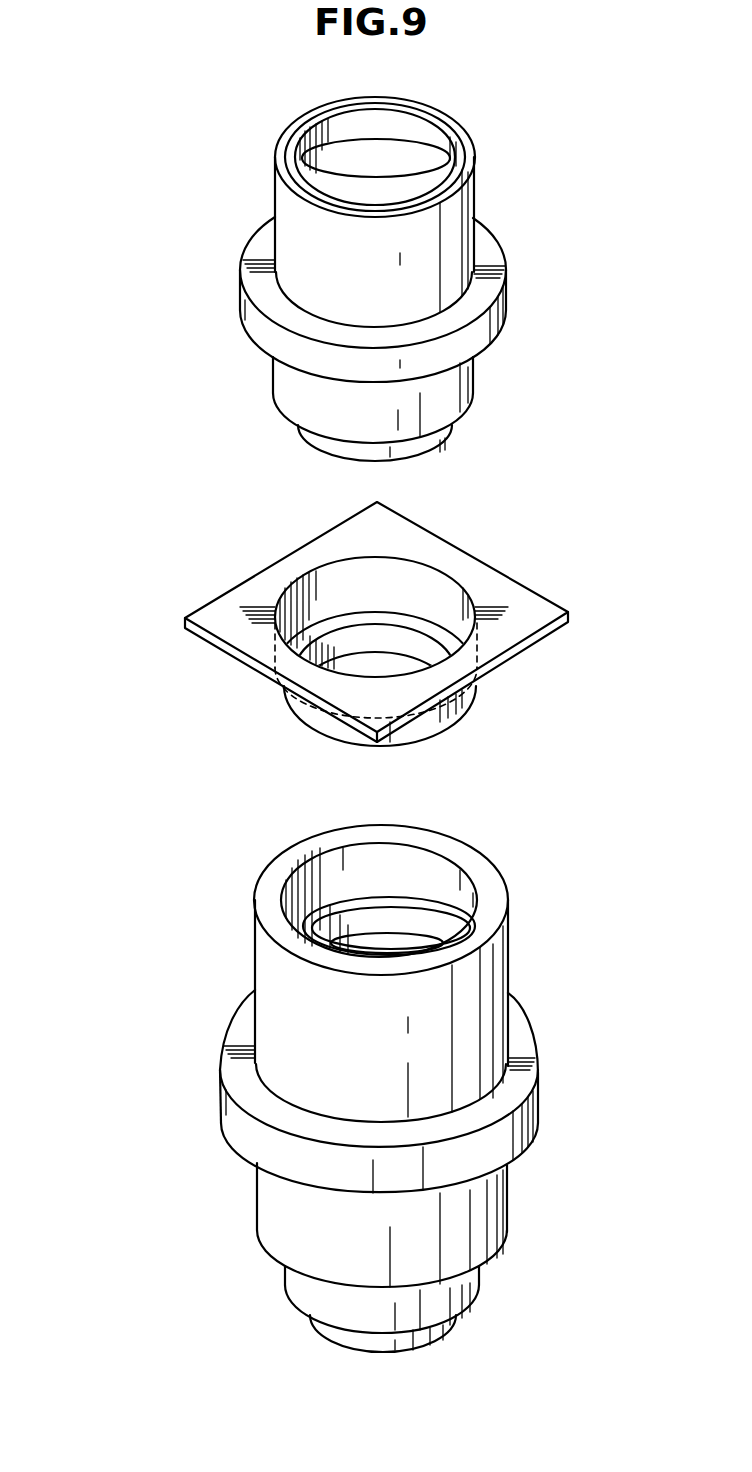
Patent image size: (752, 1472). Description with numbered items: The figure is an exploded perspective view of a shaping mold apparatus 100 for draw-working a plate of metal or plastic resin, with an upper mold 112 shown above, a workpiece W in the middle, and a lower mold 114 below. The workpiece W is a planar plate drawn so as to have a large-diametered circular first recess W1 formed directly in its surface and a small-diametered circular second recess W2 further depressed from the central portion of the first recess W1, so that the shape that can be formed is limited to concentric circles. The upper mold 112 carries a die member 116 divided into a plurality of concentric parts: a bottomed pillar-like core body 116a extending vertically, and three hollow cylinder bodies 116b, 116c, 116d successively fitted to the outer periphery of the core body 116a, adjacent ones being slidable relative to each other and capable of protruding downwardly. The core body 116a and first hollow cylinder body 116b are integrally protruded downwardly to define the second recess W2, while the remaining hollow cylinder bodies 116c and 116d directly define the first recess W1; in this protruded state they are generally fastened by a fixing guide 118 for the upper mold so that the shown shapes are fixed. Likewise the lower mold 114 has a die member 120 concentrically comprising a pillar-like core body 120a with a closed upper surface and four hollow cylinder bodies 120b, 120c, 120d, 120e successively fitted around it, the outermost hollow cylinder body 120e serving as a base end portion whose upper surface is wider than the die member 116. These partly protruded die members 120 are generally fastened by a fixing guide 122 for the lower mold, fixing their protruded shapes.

The shaping mold apparatus 100 is at (113, 1120).
The upper mold 112 is at (508, 217).
The lower mold 114 is at (547, 1007).
The die member 116 is at (471, 131).
The core body 116a is at (353, 167).
The first hollow cylinder body 116b is at (415, 150).
The hollow cylinder body 116c is at (295, 167).
The hollow cylinder body 116d is at (287, 175).
The fixing guide for the upper mold 118 is at (505, 302).
The die member 120 is at (502, 871).
The core body 120a is at (395, 962).
The hollow cylinder body 120b is at (347, 940).
The hollow cylinder body 120c is at (383, 907).
The hollow cylinder body 120d is at (332, 903).
The outermost hollow cylinder body 120e is at (263, 912).
The fixing guide for the lower mold 122 is at (537, 1113).
The workpiece W is at (535, 607).
The first recess W1 is at (432, 592).
The second recess W2 is at (425, 642).